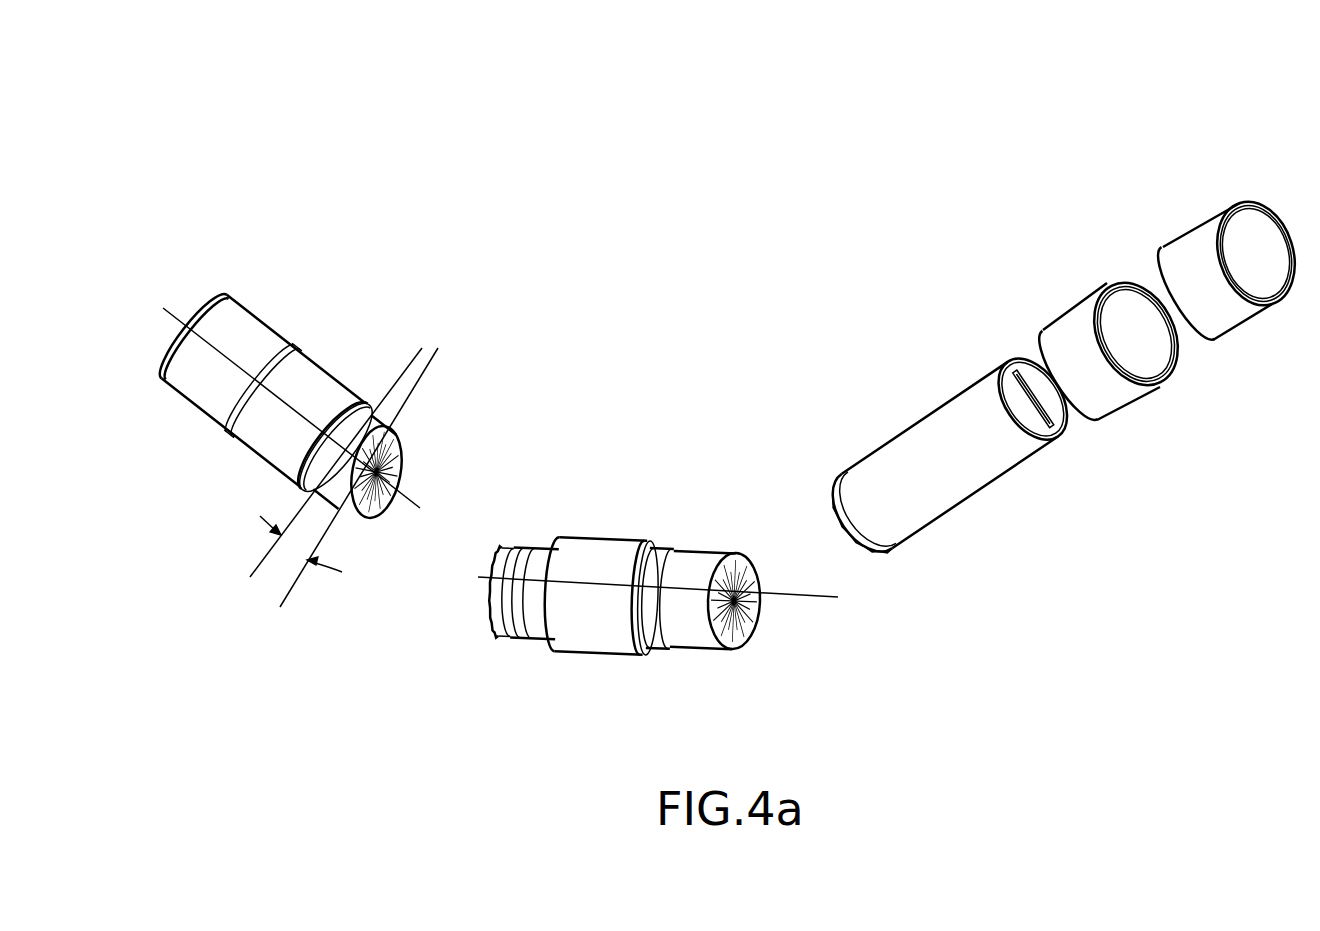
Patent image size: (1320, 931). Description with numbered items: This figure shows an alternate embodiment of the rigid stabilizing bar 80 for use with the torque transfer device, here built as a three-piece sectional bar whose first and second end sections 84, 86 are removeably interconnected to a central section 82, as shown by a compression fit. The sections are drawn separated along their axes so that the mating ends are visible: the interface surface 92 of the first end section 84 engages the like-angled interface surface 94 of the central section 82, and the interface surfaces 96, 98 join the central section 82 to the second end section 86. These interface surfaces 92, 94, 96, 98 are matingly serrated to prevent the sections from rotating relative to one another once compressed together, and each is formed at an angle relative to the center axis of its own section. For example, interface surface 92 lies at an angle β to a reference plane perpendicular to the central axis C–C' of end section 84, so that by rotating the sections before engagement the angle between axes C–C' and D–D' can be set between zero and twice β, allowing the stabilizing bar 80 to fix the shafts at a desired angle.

The rigid stabilizing bar 80 is at (706, 226).
The central section 82 is at (553, 627).
The first end section 84 is at (252, 437).
The second end section 86 is at (938, 505).
The interface surface 92 is at (393, 462).
The interface surface 94 is at (508, 563).
The interface surface 96 is at (762, 625).
The interface surface 98 is at (838, 505).